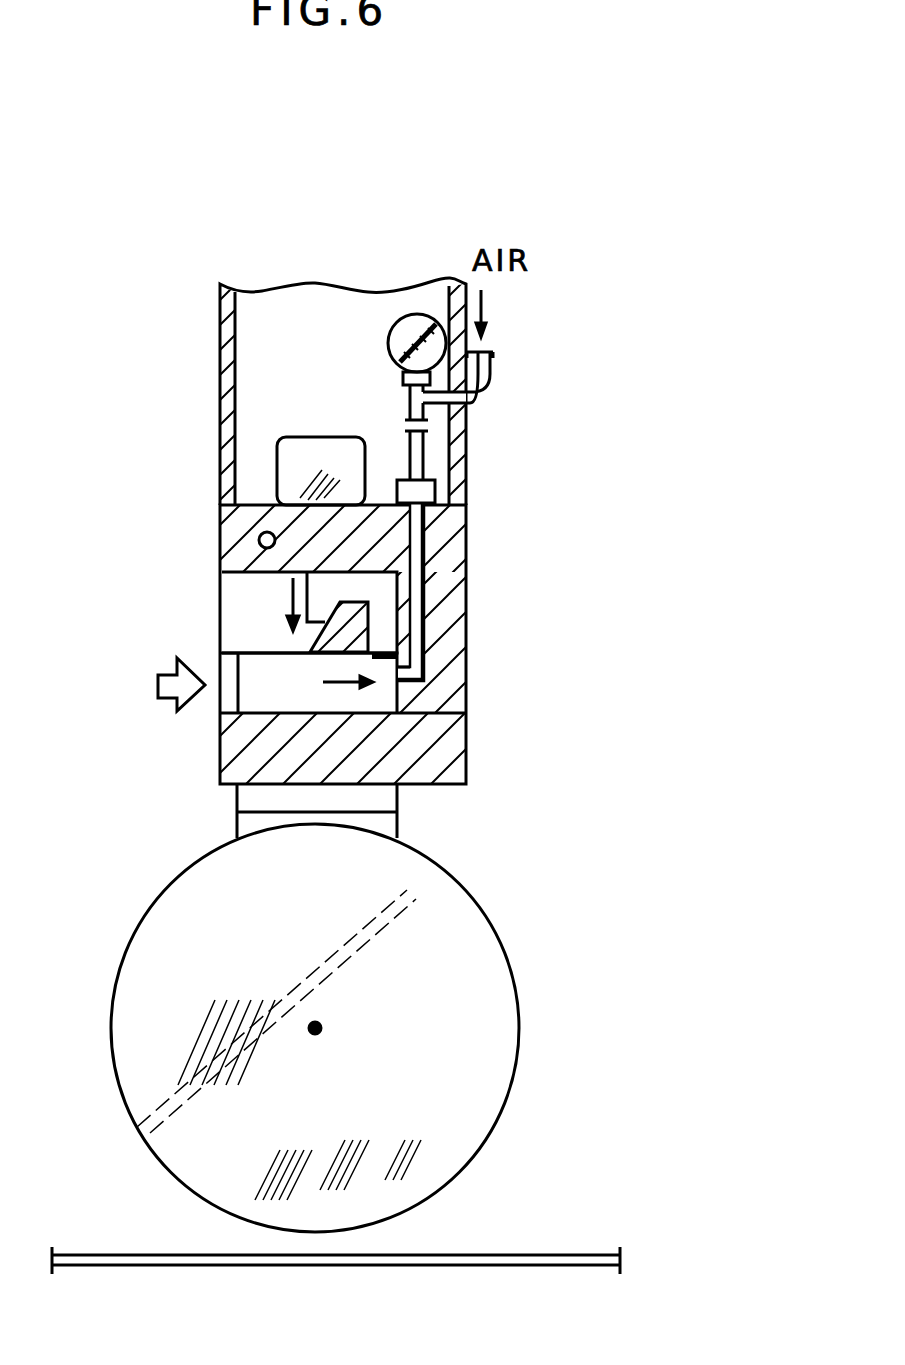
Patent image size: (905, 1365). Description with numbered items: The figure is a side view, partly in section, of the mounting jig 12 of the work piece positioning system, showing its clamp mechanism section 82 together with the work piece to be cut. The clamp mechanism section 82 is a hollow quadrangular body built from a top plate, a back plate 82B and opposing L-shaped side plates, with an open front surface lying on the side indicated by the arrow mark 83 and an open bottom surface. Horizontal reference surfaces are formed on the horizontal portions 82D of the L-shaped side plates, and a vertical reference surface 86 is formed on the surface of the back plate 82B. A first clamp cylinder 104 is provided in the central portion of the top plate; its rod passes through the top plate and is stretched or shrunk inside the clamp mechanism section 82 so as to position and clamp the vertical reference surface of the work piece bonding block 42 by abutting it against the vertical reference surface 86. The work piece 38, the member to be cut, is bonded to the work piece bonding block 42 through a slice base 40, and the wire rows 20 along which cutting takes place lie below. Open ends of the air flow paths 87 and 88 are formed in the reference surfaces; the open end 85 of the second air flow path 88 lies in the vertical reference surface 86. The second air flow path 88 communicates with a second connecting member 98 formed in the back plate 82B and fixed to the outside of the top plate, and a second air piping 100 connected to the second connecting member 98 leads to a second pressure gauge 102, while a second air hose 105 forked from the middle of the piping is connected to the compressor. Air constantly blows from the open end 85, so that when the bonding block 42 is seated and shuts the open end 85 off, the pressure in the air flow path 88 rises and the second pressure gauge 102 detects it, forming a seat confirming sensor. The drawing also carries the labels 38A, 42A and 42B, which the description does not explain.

The mounting jig 12 is at (545, 524).
The wire rows 20 is at (512, 1250).
The work piece 38 is at (493, 1031).
The roller axis 38A is at (315, 1028).
The slice base 40 is at (380, 822).
The work piece bonding block 42 is at (263, 648).
The passage chamber 42A is at (252, 670).
The passage outlet 42B is at (397, 800).
The clamp mechanism section 82 is at (485, 642).
The back plate 82B is at (450, 687).
The horizontal portions 82D is at (257, 757).
The arrow mark 83 is at (157, 685).
The open end 85 is at (397, 680).
The vertical reference surface 86 is at (400, 678).
The first air flow path 87 is at (256, 532).
The second air flow path 88 is at (425, 583).
The second connecting member 98 is at (433, 487).
The second air piping 100 is at (427, 455).
The second pressure gauge 102 is at (387, 356).
The first clamp cylinder 104 is at (323, 457).
The second air hose 105 is at (483, 373).